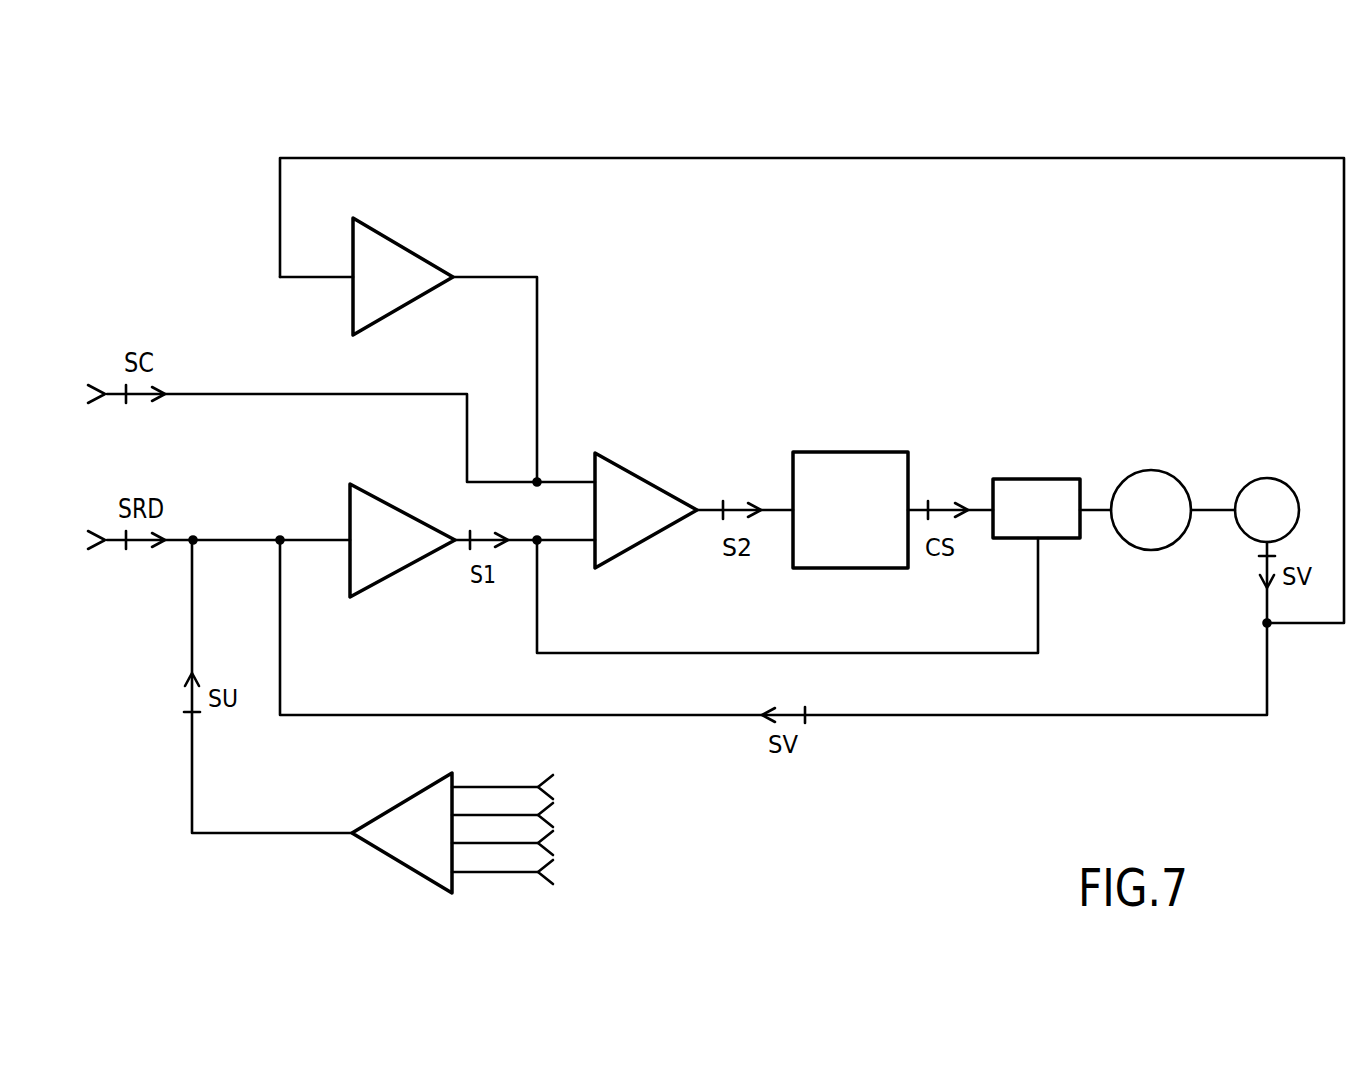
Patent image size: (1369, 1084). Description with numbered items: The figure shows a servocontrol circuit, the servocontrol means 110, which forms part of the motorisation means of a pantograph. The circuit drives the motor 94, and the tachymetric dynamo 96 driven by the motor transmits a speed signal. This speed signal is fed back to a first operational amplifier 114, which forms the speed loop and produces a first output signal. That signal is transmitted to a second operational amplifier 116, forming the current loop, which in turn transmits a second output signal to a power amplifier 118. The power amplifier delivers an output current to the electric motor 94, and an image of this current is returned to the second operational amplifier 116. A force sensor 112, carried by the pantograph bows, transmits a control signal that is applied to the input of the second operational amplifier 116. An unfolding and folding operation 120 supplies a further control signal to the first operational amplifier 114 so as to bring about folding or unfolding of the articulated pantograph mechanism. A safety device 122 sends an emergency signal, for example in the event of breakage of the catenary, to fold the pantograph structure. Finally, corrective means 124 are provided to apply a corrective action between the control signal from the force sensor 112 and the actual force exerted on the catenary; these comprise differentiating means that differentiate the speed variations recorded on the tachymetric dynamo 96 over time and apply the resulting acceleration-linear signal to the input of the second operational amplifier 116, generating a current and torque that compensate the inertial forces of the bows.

The servocontrol means 110 is at (535, 149).
The force sensor 112 is at (317, 430).
The unfolding and folding operation 120 is at (193, 540).
The corrective means 124 is at (400, 286).
The first operational amplifier 114 is at (398, 550).
The second operational amplifier 116 is at (641, 520).
The power amplifier 118 is at (869, 520).
The motor 94 is at (1165, 522).
The tachymetric dynamo 96 is at (1281, 522).
The safety device 122 is at (430, 843).